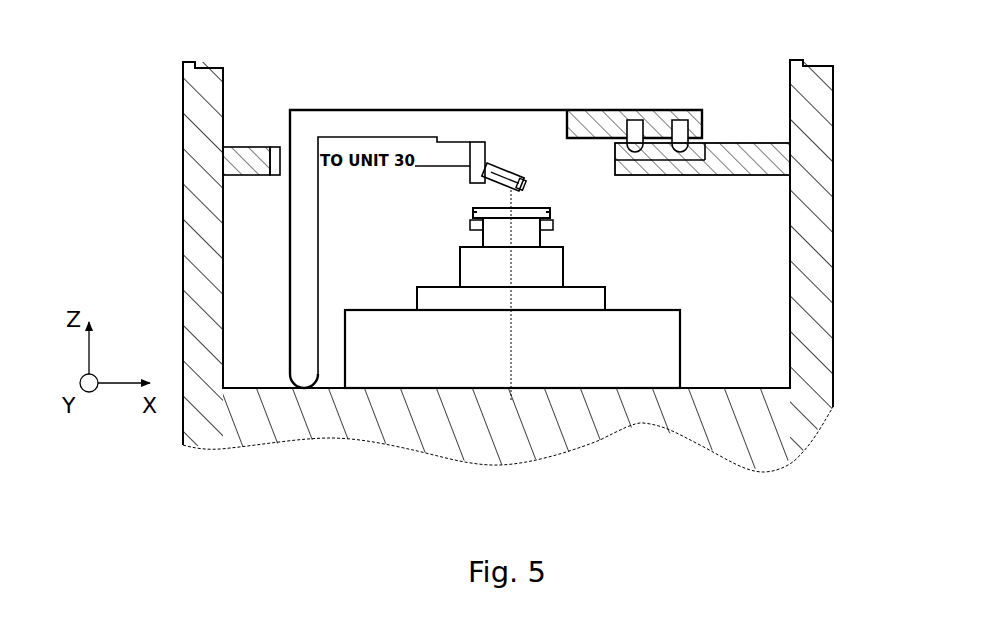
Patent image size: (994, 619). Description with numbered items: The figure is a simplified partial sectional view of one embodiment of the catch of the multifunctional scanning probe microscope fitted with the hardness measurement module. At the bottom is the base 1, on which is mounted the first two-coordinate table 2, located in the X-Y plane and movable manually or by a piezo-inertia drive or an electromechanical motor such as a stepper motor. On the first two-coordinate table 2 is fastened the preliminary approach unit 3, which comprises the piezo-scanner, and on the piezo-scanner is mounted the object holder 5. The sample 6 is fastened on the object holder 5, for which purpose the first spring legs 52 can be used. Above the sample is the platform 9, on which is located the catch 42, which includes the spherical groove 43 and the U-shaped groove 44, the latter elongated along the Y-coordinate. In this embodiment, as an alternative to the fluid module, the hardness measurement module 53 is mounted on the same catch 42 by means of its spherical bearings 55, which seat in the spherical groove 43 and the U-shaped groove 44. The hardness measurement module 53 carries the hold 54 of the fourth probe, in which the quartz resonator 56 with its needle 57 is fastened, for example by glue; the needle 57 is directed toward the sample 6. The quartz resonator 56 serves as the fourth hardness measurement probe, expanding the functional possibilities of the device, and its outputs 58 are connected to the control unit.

The base 1 is at (588, 431).
The first two-coordinate table 2 is at (498, 237).
The preliminary approach unit 3 is at (505, 297).
The object holder 5 is at (453, 340).
The sample 6 is at (532, 214).
The platform 9 is at (757, 152).
The catch 42 is at (680, 165).
The spherical groove 43 is at (693, 157).
The U-shaped groove 44 is at (647, 157).
The first spring legs 52 is at (555, 230).
The hardness measurement module 53 is at (300, 108).
The hold of the fourth probe 54 is at (476, 145).
The spherical bearings 55 is at (635, 128).
The quartz resonator 56 is at (492, 168).
The needle 57 is at (515, 187).
The outputs 58 is at (458, 160).